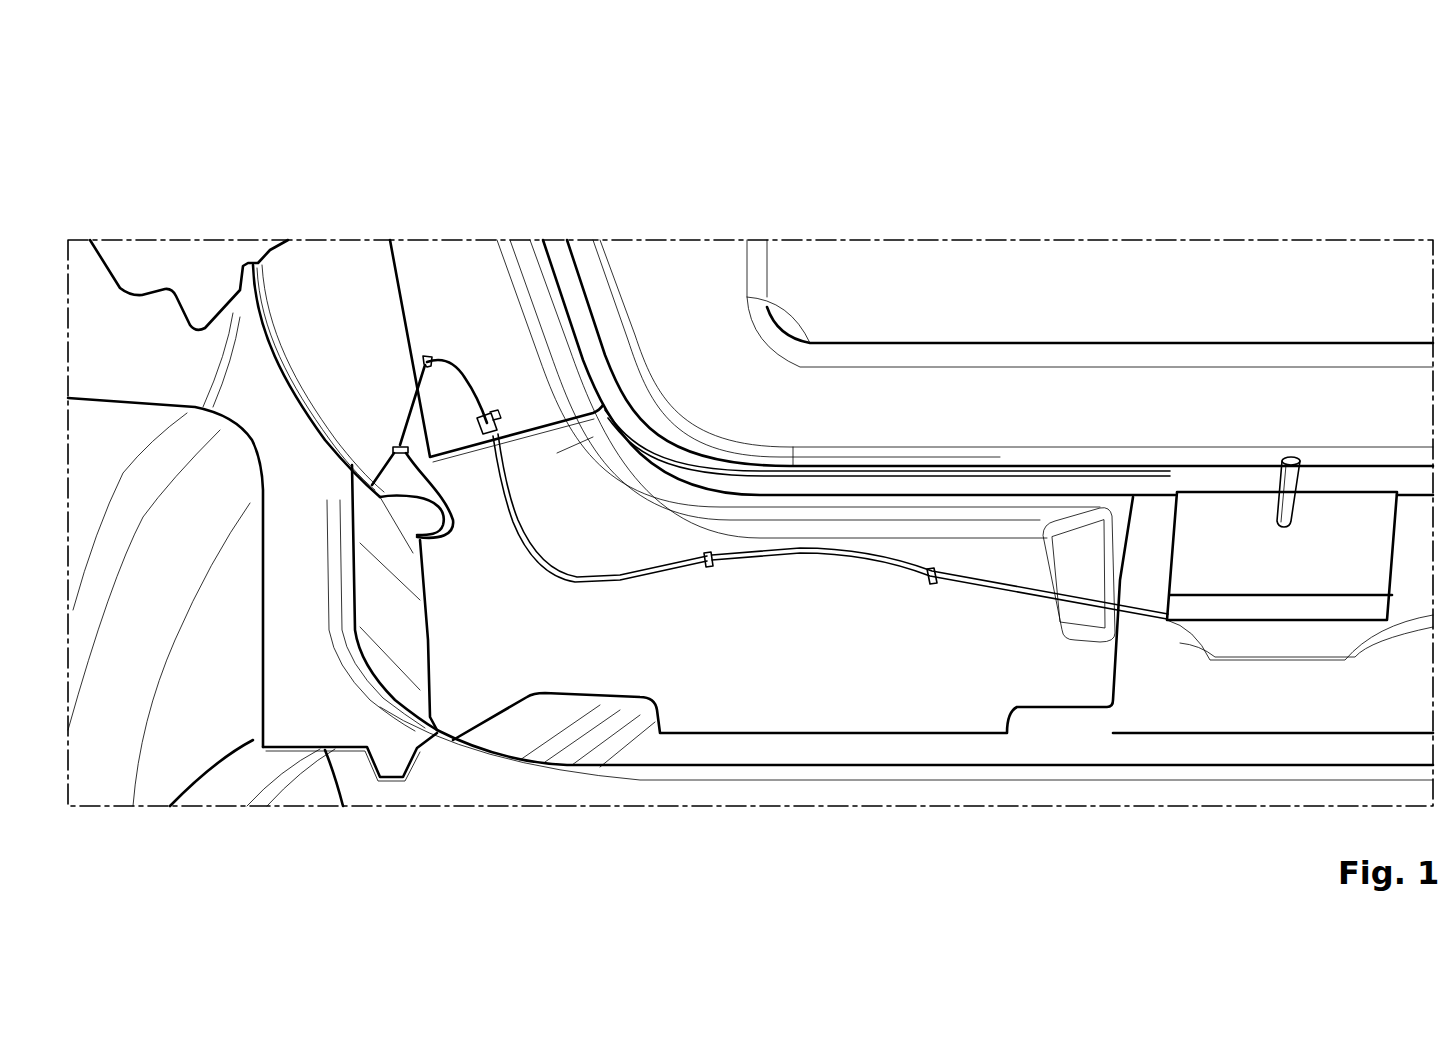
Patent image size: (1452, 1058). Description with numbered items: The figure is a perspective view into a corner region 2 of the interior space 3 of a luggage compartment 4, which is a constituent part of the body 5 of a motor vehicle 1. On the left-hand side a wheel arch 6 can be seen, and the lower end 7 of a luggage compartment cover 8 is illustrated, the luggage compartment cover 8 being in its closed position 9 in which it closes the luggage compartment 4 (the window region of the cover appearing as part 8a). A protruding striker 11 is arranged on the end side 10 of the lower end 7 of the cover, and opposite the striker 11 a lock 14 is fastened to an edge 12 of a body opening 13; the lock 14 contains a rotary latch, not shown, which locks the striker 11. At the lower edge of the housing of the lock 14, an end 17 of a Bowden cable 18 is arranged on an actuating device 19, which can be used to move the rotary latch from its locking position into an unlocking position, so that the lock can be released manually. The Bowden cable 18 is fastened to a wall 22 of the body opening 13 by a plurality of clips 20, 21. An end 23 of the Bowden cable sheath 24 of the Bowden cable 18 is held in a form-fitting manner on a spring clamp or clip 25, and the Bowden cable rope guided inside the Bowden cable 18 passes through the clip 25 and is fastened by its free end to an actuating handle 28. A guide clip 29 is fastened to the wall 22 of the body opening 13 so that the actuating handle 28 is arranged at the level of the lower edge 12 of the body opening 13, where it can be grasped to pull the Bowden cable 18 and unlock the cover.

The motor vehicle 1 is at (750, 429).
The corner region 2 is at (750, 429).
The interior space 3 is at (750, 429).
The luggage compartment 4 is at (750, 429).
The body 5 is at (1000, 86).
The wheel arch 6 is at (113, 457).
The lower end 7 is at (1090, 303).
The luggage compartment cover 8 is at (1090, 303).
The window pane 8a is at (1090, 303).
The closed position 9 is at (1006, 311).
The end side 10 is at (1322, 350).
The striker 11 is at (1288, 456).
The edge 12 is at (890, 325).
The body opening 13 is at (1117, 470).
The lock 14 is at (1220, 510).
The end 17 is at (870, 656).
The Bowden cable 18 is at (870, 656).
The actuating device 19 is at (1160, 620).
The clip 20 is at (933, 584).
The clip 21 is at (708, 568).
The wall 22 is at (548, 642).
The end 23 is at (497, 290).
The Bowden cable sheath 24 is at (500, 430).
The clip 25 is at (492, 410).
The actuating handle 28 is at (383, 477).
The guide clip 29 is at (430, 353).